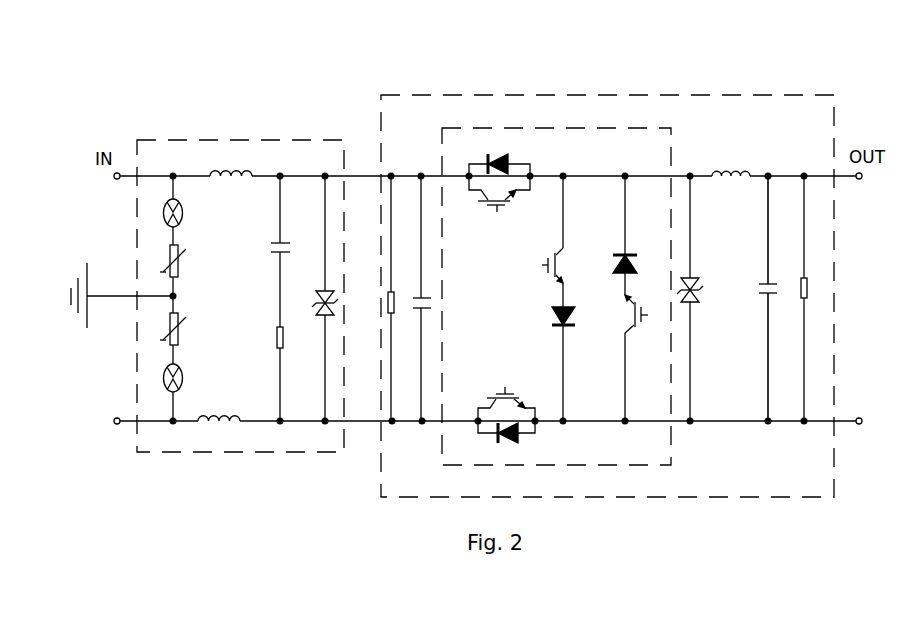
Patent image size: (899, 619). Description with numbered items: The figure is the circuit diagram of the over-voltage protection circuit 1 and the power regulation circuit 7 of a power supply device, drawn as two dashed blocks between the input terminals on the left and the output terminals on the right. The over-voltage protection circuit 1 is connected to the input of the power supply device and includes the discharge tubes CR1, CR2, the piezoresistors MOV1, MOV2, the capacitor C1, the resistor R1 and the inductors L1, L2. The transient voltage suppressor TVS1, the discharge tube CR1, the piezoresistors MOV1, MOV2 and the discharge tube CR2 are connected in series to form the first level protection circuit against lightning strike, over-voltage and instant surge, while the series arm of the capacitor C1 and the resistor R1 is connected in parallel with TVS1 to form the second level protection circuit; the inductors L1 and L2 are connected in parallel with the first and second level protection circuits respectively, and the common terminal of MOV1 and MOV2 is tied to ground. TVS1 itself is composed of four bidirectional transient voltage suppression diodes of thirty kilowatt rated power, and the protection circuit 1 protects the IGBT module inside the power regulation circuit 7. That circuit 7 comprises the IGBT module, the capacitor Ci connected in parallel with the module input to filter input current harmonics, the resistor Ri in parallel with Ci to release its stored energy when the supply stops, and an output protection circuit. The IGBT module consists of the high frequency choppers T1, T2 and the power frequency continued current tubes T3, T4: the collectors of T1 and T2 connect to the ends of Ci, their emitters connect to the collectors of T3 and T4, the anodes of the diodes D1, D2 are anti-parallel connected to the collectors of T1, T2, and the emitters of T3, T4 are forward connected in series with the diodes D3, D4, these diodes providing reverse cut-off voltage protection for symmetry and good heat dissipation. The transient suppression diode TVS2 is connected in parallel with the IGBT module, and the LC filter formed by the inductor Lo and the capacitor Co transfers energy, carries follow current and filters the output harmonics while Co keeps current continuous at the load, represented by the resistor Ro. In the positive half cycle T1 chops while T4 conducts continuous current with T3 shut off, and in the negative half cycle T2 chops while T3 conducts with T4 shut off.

The over-voltage protection circuit 1 is at (240, 250).
The power regulation circuit 7 is at (607, 260).
The inductor L1 is at (231, 164).
The inductor L2 is at (219, 408).
The discharge tube CR1 is at (193, 210).
The discharge tube CR2 is at (193, 392).
The piezoresistor MOV1 is at (199, 279).
The piezoresistor MOV2 is at (199, 338).
The capacitor C1 is at (288, 251).
The resistor R1 is at (293, 374).
The transient voltage suppression diode TVS1 is at (309, 298).
The resistor Ri is at (398, 298).
The capacitor Ci is at (426, 298).
The diode D1 is at (502, 161).
The diode D2 is at (503, 440).
The diode D3 is at (555, 364).
The diode D4 is at (633, 235).
The high frequency chopper T1 is at (500, 197).
The high frequency chopper T2 is at (514, 404).
The power frequency continued current tube T3 is at (544, 241).
The power frequency continued current tube T4 is at (639, 358).
The transient suppression diode TVS2 is at (708, 298).
The inductor Lo is at (731, 161).
The capacitor Co is at (760, 298).
The load resistor Ro is at (794, 298).